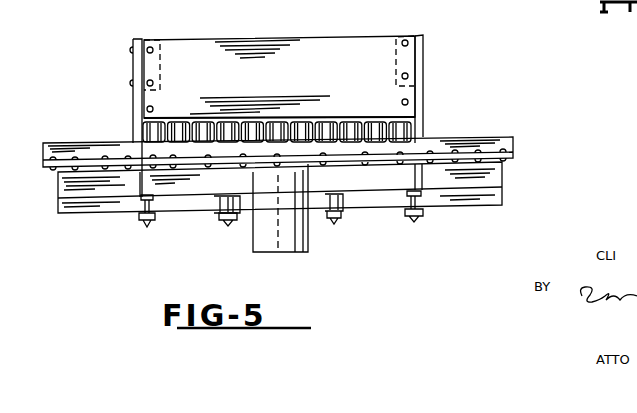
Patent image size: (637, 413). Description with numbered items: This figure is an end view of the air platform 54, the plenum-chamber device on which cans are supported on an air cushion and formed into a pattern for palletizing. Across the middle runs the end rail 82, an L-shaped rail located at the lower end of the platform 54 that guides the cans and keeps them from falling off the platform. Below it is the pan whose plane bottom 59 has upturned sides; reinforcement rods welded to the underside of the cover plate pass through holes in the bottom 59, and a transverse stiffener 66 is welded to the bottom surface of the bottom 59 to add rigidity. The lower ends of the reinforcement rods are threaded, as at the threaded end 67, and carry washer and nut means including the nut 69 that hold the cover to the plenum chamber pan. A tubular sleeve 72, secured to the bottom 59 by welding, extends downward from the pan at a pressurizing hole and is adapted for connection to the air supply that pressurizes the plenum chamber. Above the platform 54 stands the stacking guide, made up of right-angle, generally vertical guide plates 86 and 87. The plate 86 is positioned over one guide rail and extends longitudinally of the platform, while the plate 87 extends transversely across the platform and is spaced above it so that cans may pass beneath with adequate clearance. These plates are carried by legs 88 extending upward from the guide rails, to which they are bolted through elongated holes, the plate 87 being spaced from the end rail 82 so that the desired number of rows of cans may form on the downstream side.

The air platform 54 is at (492, 114).
The plane bottom 59 is at (485, 180).
The transverse stiffener 66 is at (420, 200).
The threaded lower end 67 is at (148, 227).
The nut means 69 is at (228, 226).
The tubular sleeve 72 is at (309, 240).
The end rail 82 is at (513, 143).
The guide plate 86 is at (158, 62).
The guide plate 87 is at (330, 50).
The leg 88 is at (133, 62).